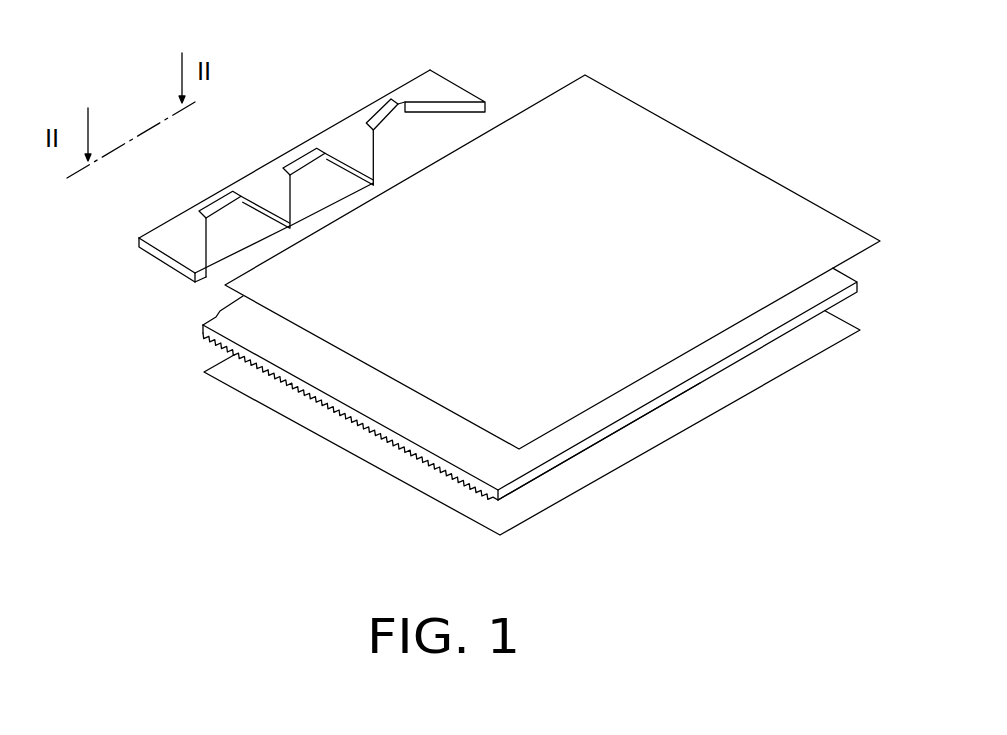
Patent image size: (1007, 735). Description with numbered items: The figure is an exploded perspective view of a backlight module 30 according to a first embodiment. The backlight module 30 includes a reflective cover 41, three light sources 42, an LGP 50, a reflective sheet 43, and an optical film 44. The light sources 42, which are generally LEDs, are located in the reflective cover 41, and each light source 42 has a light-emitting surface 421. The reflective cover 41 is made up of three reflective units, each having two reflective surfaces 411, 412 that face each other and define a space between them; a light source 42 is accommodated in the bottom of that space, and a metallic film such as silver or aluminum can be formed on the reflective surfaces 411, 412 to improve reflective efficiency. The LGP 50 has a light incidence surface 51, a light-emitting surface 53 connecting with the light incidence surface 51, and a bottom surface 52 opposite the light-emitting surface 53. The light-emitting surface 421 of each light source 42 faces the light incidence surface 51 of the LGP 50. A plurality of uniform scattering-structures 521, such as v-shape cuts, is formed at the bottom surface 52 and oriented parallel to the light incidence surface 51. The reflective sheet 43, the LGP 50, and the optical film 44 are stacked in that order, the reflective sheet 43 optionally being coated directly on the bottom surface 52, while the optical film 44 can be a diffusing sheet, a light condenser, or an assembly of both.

The backlight module 30 is at (622, 50).
The reflective cover 41 is at (343, 142).
The reflective surface 411 is at (267, 212).
The reflective surface 412 is at (211, 252).
The light source 42 is at (387, 113).
The light-emitting surface 421 is at (397, 92).
The optical film 44 is at (787, 214).
The LGP 50 is at (857, 288).
The light incidence surface 51 is at (205, 315).
The bottom surface 52 is at (351, 423).
The scattering-structures 521 is at (291, 383).
The light-emitting surface 53 is at (487, 461).
The reflective sheet 43 is at (600, 448).